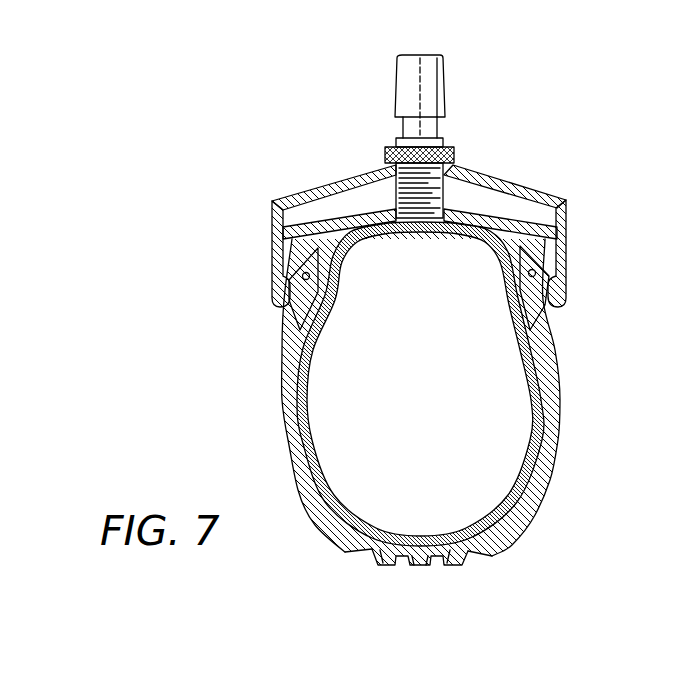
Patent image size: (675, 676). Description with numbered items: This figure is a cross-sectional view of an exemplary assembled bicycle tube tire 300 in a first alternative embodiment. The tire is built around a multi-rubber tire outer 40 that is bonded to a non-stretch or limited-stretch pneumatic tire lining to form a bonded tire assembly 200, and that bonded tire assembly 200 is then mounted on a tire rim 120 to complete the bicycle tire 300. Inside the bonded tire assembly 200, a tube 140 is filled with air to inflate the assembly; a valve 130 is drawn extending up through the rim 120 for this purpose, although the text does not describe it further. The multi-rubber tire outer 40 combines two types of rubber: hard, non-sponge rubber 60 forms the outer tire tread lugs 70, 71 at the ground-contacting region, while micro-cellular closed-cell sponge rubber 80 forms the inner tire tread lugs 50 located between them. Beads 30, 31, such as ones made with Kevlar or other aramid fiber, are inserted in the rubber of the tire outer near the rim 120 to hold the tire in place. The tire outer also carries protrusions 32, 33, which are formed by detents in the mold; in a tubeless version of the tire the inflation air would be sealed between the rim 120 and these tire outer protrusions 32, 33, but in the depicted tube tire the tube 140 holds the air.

The bicycle tire 300 is at (120, 245).
The valve cap 130 is at (436, 53).
The tire rim 120 is at (530, 193).
The tire outer protrusion 33 is at (283, 283).
The tire outer protrusion 32 is at (550, 258).
The bead 31 is at (308, 277).
The bead 30 is at (530, 274).
The bonded tire assembly 200 is at (553, 340).
The tube 140 is at (323, 413).
The multi-rubber tire outer 40 is at (279, 413).
The hard, non-sponge rubber 60 is at (500, 527).
The micro-cellular closed-cell sponge rubber 80 is at (414, 548).
The outer tire tread lug 71 is at (340, 557).
The inner tire tread lugs 50 is at (460, 563).
The outer tire tread lug 70 is at (502, 545).